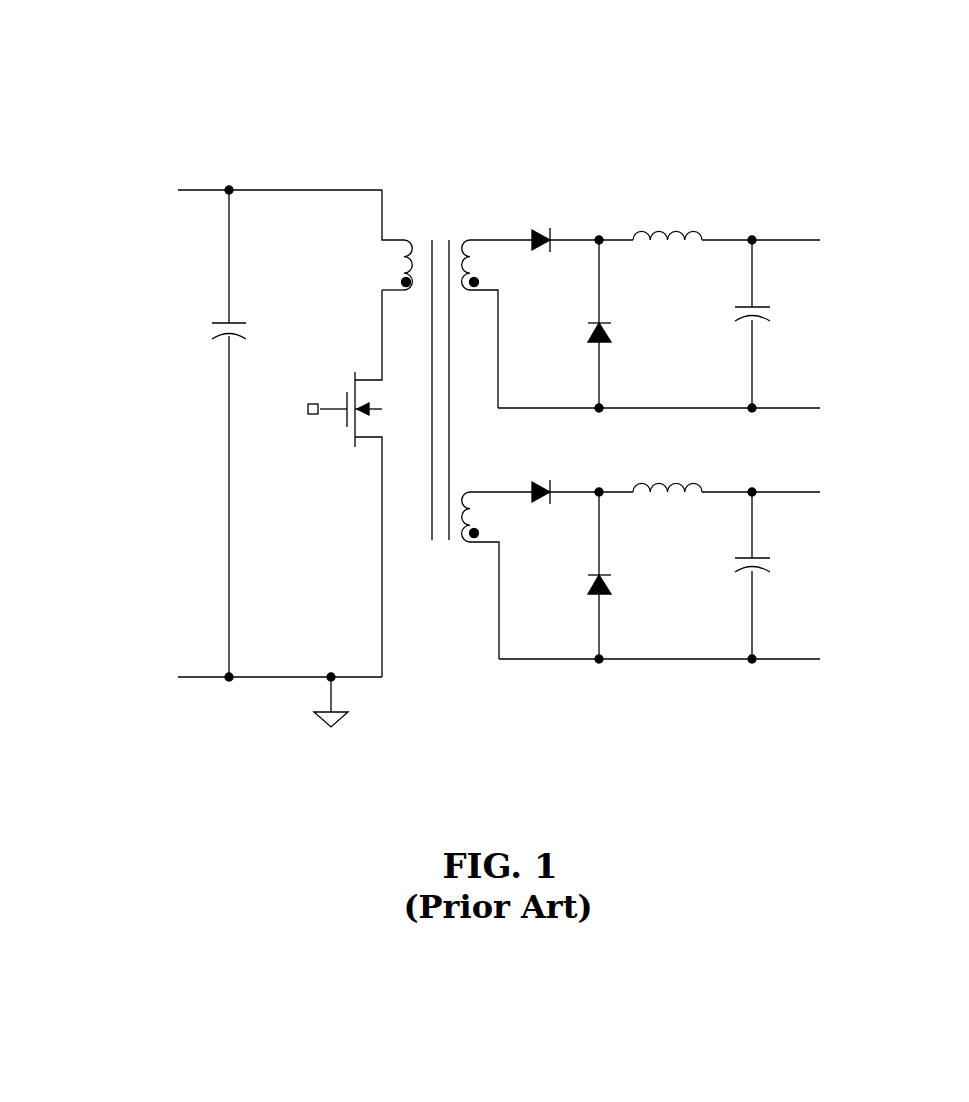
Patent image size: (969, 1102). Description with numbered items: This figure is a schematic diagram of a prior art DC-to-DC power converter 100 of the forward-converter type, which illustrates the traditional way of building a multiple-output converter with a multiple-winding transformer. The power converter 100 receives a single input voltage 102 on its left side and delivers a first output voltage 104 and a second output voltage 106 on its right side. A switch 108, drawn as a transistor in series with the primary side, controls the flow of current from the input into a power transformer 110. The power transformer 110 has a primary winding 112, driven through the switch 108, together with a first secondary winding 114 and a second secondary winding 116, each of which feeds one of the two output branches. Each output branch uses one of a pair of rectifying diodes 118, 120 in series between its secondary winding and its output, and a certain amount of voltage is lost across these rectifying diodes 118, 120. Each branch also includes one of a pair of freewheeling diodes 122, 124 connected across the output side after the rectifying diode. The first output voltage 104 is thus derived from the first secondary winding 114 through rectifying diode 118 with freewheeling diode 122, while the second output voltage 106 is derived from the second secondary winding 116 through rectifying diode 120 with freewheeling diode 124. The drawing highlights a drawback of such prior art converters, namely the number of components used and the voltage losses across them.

The power converter 100 is at (203, 55).
The input voltage 102 is at (188, 182).
The first output voltage 104 is at (805, 245).
The second output voltage 106 is at (808, 500).
The switch 108 is at (334, 455).
The power transformer 110 is at (455, 163).
The primary winding 112 is at (390, 248).
The first secondary winding 114 is at (493, 240).
The second secondary winding 116 is at (476, 490).
The rectifying diode 118 is at (565, 200).
The rectifying diode 120 is at (565, 470).
The freewheeling diode 122 is at (624, 343).
The freewheeling diode 124 is at (619, 598).